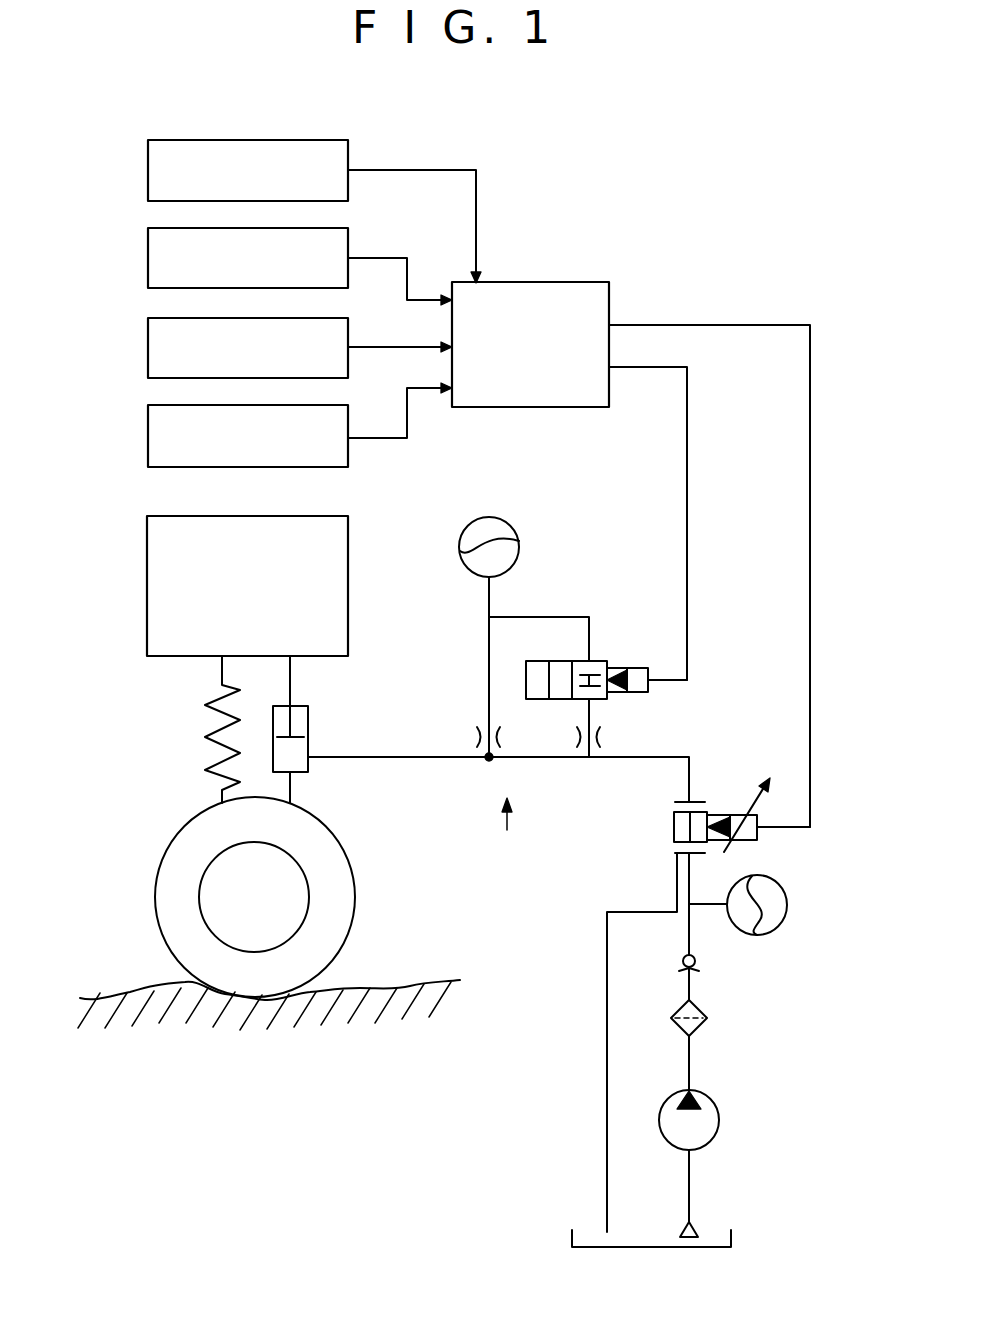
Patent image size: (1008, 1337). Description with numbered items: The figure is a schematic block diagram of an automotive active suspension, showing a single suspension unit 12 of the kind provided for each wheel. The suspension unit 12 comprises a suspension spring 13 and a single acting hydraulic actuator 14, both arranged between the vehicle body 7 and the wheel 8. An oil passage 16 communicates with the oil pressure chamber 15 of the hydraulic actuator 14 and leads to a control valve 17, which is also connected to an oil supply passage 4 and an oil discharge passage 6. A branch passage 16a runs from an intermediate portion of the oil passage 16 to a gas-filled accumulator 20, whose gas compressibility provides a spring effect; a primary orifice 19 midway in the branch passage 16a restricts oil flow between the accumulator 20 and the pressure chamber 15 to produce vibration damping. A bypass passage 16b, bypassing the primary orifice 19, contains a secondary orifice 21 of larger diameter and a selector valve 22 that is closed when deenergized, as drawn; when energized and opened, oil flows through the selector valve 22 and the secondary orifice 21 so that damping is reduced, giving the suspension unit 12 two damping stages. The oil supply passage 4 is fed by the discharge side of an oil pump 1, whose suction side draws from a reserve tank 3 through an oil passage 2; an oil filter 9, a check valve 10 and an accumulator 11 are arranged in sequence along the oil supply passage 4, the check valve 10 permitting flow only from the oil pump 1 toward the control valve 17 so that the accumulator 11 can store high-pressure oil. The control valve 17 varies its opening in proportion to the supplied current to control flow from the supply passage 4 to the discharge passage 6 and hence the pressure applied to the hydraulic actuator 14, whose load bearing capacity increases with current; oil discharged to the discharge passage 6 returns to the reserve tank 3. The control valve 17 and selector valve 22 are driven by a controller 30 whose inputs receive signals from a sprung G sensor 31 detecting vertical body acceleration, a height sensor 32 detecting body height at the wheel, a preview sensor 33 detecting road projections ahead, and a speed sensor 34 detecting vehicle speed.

The oil pump 1 is at (719, 1121).
The oil passage 2 is at (691, 1175).
The reserve tank 3 is at (731, 1235).
The oil supply passage 4 is at (692, 870).
The oil discharge passage 6 is at (605, 998).
The vehicle body 7 is at (147, 536).
The wheel 8 is at (160, 862).
The oil filter 9 is at (707, 1020).
The check valve 10 is at (697, 965).
The accumulator 11 is at (787, 912).
The suspension unit 12 is at (510, 836).
The suspension spring 13 is at (205, 742).
The hydraulic actuator 14 is at (308, 772).
The oil pressure chamber 15 is at (298, 748).
The oil passage 16 is at (624, 757).
The branch passage 16a is at (489, 644).
The bypass passage 16b is at (546, 617).
The control valve 17 is at (757, 839).
The primary orifice 19 is at (478, 734).
The accumulator 20 is at (519, 548).
The secondary orifice 21 is at (600, 736).
The selector valve 22 is at (600, 661).
The controller 30 is at (631, 524).
The sprung G sensor 31 is at (148, 426).
The height sensor 32 is at (148, 339).
The preview sensor 33 is at (148, 249).
The speed sensor 34 is at (148, 160).